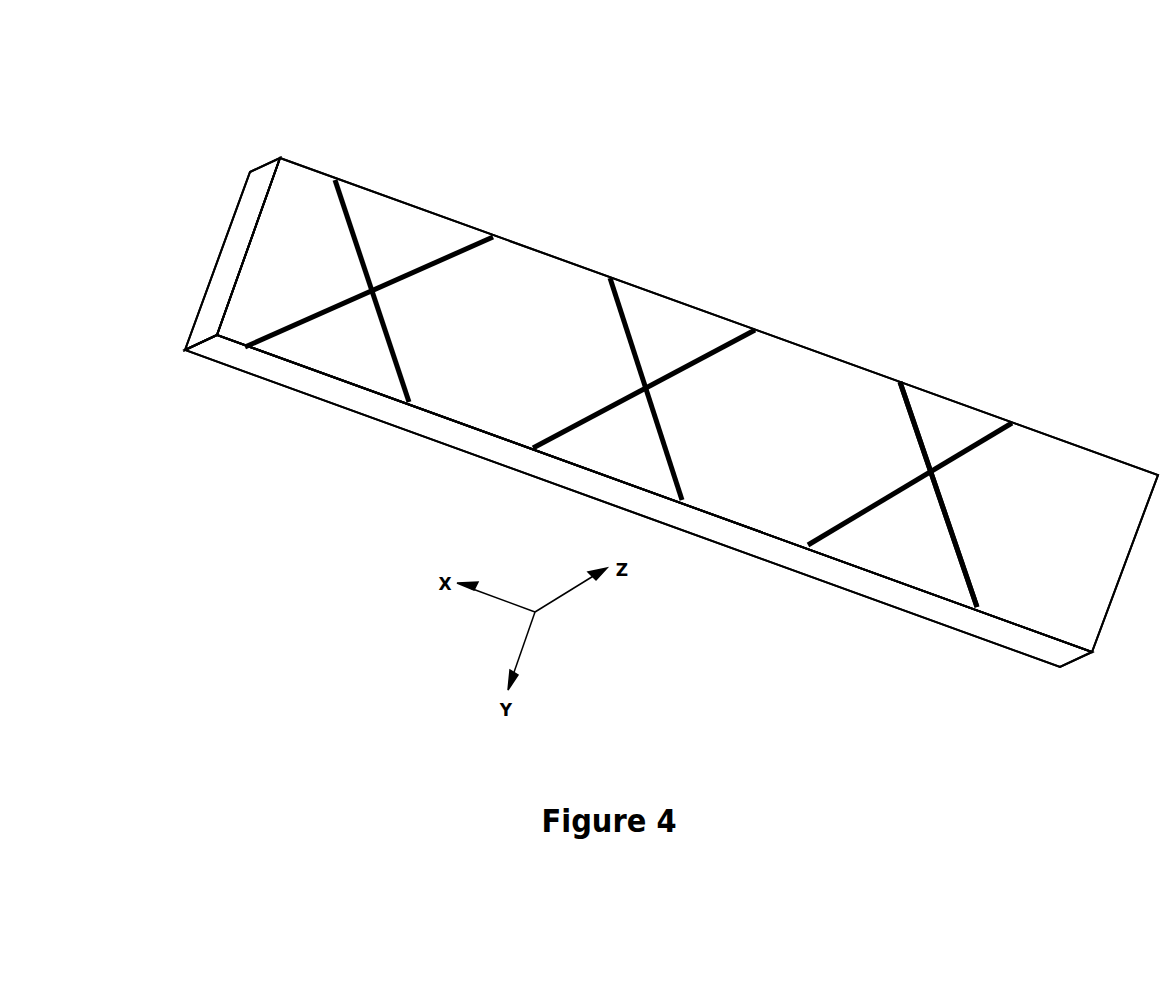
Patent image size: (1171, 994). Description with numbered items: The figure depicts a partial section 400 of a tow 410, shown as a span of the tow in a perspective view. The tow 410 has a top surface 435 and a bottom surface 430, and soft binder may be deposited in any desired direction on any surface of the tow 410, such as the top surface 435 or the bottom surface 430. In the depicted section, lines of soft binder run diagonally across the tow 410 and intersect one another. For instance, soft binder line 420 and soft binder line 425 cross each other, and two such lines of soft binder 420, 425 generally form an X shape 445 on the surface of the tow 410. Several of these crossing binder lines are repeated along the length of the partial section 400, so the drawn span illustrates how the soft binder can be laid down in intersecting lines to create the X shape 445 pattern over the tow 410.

The partial section 400 is at (968, 135).
The tow 410 is at (555, 303).
The soft binder line 420 is at (902, 480).
The soft binder line 425 is at (917, 412).
The bottom surface 430 is at (217, 253).
The top surface 435 is at (603, 350).
The X shape 445 is at (792, 542).